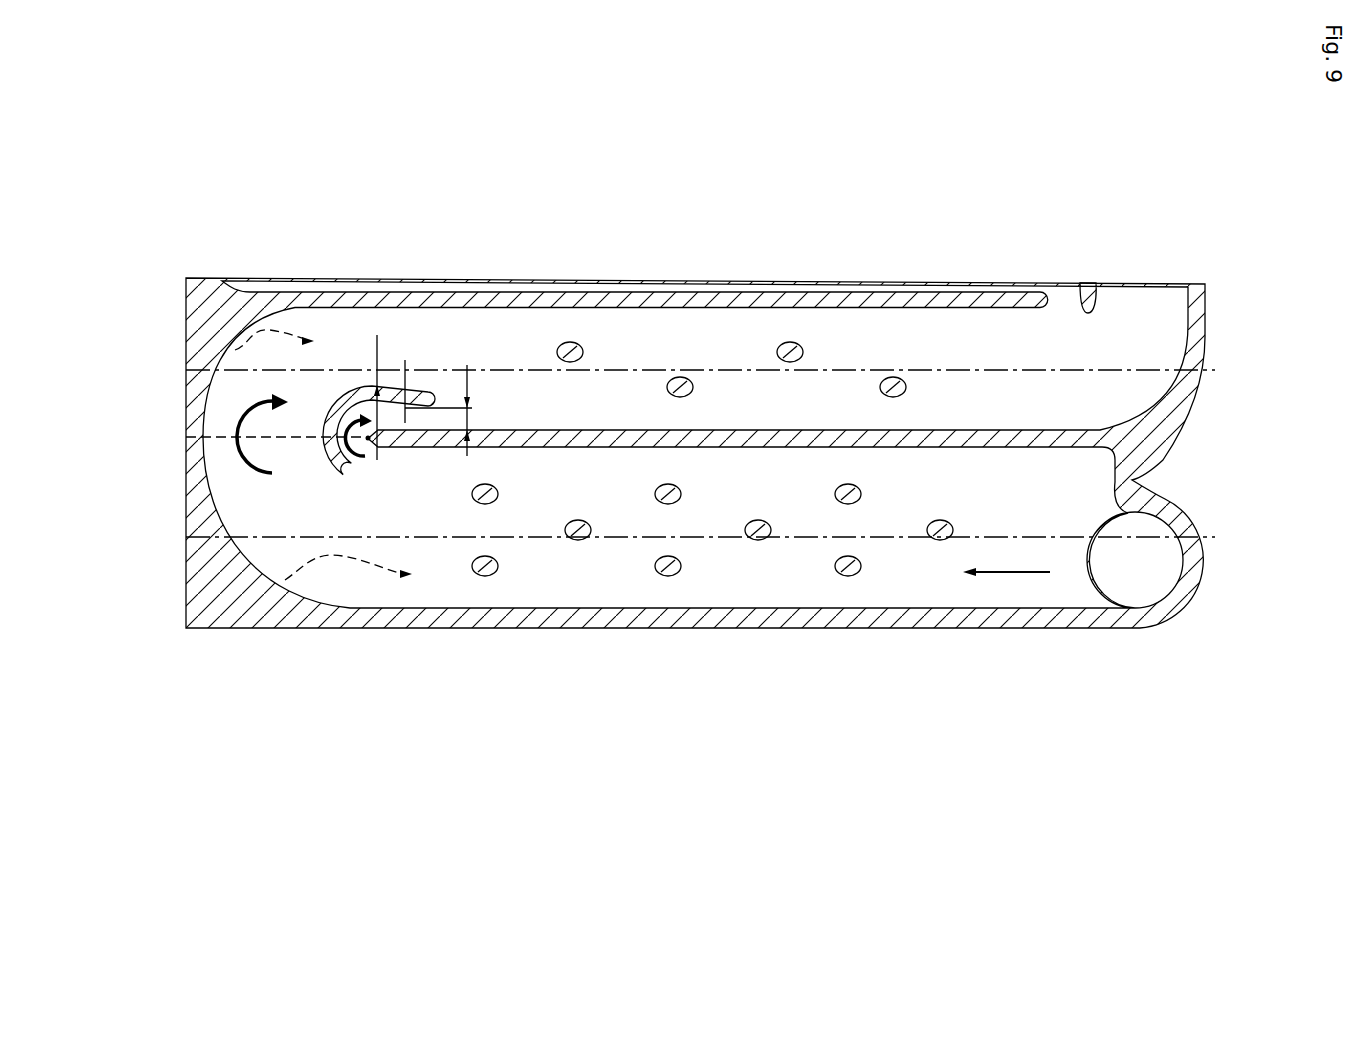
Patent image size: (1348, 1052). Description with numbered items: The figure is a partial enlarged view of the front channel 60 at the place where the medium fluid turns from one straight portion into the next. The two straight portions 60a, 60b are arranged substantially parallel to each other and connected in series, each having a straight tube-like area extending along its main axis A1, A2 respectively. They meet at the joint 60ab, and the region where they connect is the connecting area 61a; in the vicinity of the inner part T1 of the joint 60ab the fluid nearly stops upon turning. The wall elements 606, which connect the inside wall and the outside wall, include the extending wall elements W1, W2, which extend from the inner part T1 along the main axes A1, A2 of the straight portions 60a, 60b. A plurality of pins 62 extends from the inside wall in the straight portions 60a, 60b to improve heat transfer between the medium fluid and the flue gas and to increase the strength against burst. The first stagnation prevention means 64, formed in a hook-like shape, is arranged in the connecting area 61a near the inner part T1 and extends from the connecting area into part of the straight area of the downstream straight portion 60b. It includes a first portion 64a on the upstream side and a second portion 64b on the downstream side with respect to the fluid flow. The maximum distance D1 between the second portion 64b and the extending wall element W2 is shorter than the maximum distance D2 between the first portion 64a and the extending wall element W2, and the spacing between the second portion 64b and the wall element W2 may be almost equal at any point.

The front channel 60 is at (907, 580).
The straight portion 60a is at (285, 580).
The straight portion 60b is at (235, 350).
The joint 60ab is at (186, 437).
The connecting area 61a is at (307, 455).
The pins 62 is at (803, 352).
The first stagnation prevention means 64 is at (434, 386).
The first portion 64a is at (397, 370).
The second portion 64b is at (413, 378).
The wall elements 606 is at (657, 447).
The main axis A1 is at (186, 537).
The main axis A2 is at (186, 370).
The maximum distance D1 is at (461, 410).
The maximum distance D2 is at (373, 397).
The inner part T1 is at (368, 442).
The extending wall element W1 is at (520, 447).
The extending wall element W2 is at (472, 428).